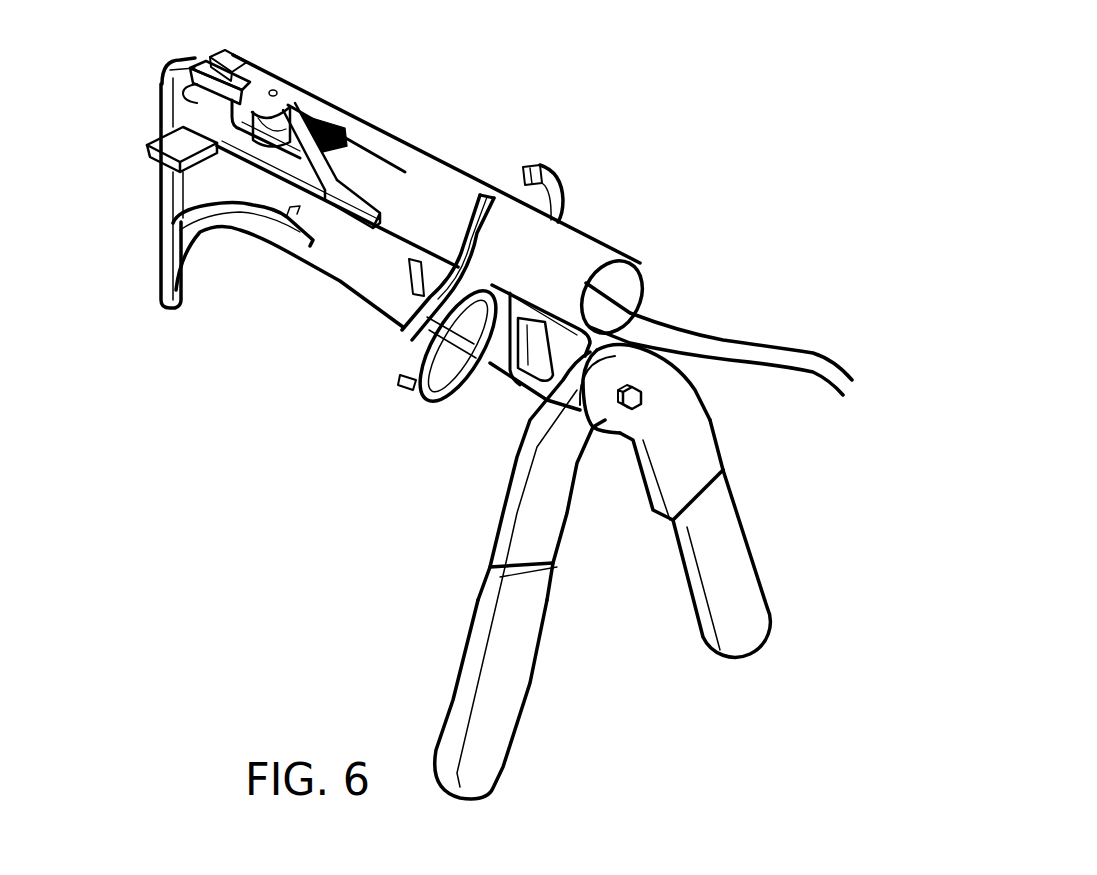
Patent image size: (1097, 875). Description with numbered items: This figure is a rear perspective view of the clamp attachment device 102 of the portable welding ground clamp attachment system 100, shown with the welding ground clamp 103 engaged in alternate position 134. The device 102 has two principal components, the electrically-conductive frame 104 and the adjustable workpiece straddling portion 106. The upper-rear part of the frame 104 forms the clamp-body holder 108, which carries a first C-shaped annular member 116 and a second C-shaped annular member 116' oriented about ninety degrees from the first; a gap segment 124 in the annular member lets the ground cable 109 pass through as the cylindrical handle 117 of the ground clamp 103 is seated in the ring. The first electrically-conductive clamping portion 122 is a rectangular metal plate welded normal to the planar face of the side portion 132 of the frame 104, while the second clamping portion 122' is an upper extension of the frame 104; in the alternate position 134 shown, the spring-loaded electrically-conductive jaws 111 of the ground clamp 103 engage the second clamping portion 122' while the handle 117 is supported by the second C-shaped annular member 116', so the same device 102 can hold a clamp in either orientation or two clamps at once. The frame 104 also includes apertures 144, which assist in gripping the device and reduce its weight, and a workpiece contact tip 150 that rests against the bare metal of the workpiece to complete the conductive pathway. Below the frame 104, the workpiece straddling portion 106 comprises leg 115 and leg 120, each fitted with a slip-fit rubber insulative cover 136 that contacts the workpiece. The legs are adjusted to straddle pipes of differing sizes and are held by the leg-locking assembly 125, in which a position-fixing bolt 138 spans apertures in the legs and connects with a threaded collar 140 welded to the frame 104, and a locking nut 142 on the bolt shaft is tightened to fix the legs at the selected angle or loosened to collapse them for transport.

The portable welding ground clamp attachment system 100 is at (665, 99).
The clamp attachment device 102 is at (686, 160).
The ground clamp 103 is at (664, 253).
The electrically-conductive frame 104 is at (325, 306).
The adjustable workpiece straddling portion 106 is at (755, 619).
The clamp-body holder 108 is at (417, 431).
The ground cable 109 is at (777, 340).
The electrically-conductive jaws 111 is at (247, 73).
The leg 115 is at (500, 520).
The C-shaped annular member 116 is at (424, 349).
The second C-shaped annular member 116' is at (567, 184).
The handle 117 is at (550, 235).
The leg 120 is at (693, 390).
The first electrically-conductive clamping portion 122 is at (135, 151).
The second clamping portion 122' is at (271, 54).
The gap segment 124 is at (516, 186).
The leg-locking assembly 125 is at (712, 428).
The side portion 132 is at (385, 268).
The alternate position 134 is at (477, 109).
The insulative cover 136 is at (750, 572).
The position-fixing bolt 138 is at (647, 400).
The threaded collar 140 is at (557, 370).
The locking nut 142 is at (613, 407).
The apertures 144 is at (296, 215).
The workpiece contact tip 150 is at (163, 293).